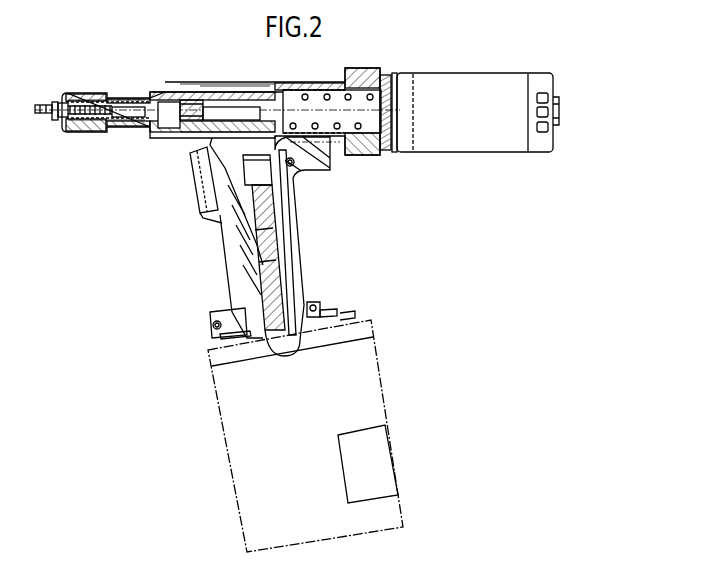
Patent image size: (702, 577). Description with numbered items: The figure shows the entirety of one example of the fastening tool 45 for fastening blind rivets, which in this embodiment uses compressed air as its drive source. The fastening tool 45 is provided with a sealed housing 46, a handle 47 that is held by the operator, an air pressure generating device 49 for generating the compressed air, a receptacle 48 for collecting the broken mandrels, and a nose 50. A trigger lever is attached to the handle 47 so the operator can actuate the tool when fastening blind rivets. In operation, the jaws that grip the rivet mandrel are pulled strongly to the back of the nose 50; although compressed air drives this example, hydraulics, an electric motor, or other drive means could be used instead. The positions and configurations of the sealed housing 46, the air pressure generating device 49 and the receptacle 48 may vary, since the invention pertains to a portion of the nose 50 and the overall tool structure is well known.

The fastening tool 45 is at (122, 238).
The sealed housing 46 is at (187, 148).
The handle 47 is at (222, 240).
The receptacle 48 is at (492, 153).
The air pressure generating device 49 is at (222, 423).
The nose 50 is at (96, 150).